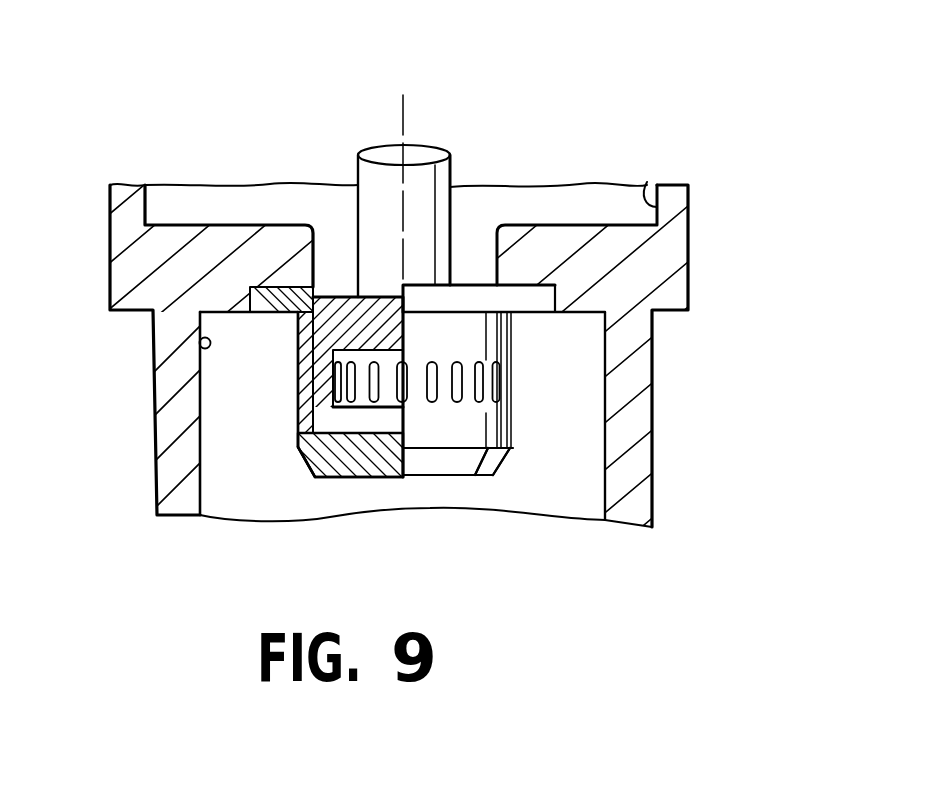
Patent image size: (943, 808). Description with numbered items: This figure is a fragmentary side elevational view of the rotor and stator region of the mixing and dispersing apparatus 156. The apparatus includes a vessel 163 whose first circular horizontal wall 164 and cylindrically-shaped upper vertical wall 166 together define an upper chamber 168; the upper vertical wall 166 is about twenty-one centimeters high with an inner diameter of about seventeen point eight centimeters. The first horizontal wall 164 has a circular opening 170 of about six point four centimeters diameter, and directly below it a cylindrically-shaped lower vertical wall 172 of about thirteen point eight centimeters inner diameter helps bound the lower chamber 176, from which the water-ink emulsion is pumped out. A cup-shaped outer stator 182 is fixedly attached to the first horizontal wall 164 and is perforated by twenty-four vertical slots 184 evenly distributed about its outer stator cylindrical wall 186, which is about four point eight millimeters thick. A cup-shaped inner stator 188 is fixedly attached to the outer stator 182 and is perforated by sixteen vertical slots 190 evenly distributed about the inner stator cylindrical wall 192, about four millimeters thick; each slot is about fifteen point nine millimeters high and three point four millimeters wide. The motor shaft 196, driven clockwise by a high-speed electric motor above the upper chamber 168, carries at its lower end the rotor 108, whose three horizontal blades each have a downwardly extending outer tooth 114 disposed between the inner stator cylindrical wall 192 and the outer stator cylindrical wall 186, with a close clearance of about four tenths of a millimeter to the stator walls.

The mixing and dispersing apparatus 156 is at (562, 117).
The rotor 108 is at (333, 297).
The motor shaft 196 is at (450, 163).
The circular opening 170 is at (305, 287).
The first circular horizontal wall 164 is at (180, 223).
The upper chamber 168 is at (587, 200).
The upper vertical wall 166 is at (647, 182).
The vessel 163 is at (688, 240).
The lower vertical wall 172 is at (200, 342).
The vertical slots 184 is at (333, 354).
The outer tooth 114 is at (298, 378).
The lower chamber 176 is at (563, 408).
The outer stator cylindrical wall 186 is at (513, 428).
The outer stator 182 is at (503, 472).
The vertical slots 190 is at (298, 445).
The inner stator 188 is at (305, 467).
The inner stator cylindrical wall 192 is at (392, 397).